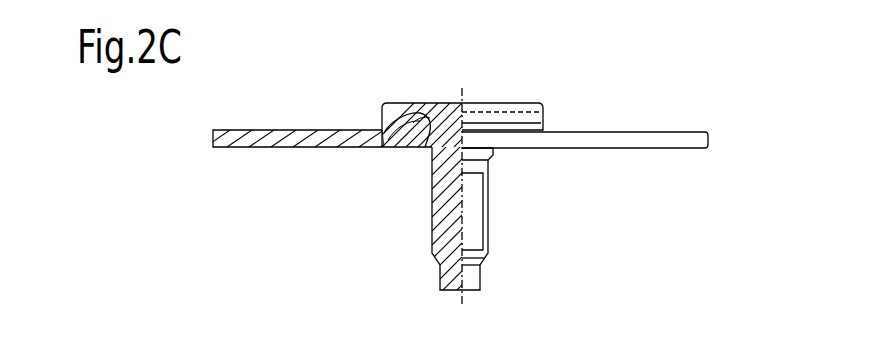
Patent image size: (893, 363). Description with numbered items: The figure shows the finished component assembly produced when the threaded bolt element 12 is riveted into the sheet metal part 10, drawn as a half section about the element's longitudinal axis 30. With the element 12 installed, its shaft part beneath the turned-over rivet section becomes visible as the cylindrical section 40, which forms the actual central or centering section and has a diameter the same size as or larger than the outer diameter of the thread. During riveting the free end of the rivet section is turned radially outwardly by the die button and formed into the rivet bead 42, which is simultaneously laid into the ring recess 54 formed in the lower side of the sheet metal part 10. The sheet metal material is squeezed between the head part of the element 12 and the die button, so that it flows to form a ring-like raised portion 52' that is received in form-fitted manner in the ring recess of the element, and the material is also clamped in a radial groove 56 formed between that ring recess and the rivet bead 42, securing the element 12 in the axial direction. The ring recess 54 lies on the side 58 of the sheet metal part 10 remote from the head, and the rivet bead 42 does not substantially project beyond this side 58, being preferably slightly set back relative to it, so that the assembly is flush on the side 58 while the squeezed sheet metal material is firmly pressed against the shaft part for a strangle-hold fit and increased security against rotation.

The sheet metal part 10 is at (255, 148).
The element 12 is at (543, 111).
The rivet axis 30 is at (463, 91).
The cylindrical section 40 is at (490, 151).
The rivet bead 42 is at (432, 152).
The ring-like raised portion 52' is at (374, 82).
The ring recess 54 is at (430, 148).
The radial groove 56 is at (413, 123).
The side of the sheet metal part 58 is at (638, 148).